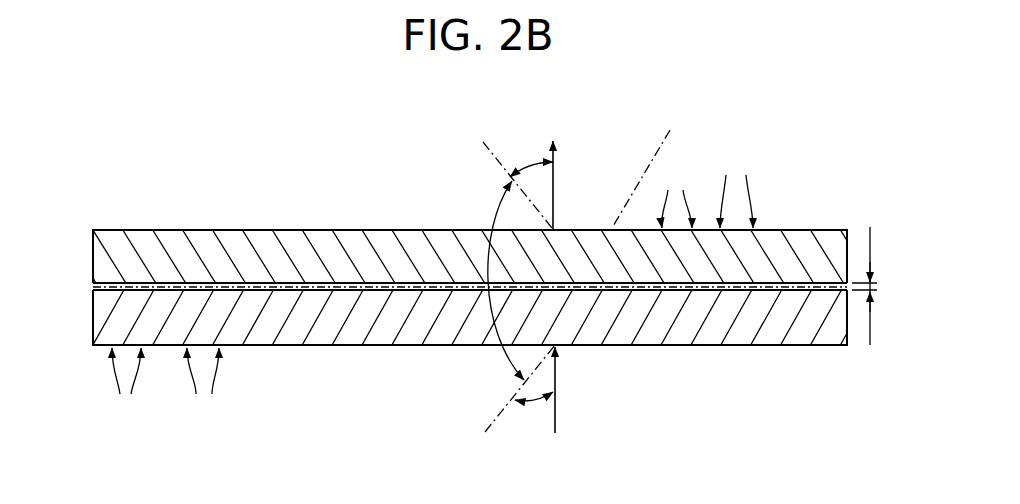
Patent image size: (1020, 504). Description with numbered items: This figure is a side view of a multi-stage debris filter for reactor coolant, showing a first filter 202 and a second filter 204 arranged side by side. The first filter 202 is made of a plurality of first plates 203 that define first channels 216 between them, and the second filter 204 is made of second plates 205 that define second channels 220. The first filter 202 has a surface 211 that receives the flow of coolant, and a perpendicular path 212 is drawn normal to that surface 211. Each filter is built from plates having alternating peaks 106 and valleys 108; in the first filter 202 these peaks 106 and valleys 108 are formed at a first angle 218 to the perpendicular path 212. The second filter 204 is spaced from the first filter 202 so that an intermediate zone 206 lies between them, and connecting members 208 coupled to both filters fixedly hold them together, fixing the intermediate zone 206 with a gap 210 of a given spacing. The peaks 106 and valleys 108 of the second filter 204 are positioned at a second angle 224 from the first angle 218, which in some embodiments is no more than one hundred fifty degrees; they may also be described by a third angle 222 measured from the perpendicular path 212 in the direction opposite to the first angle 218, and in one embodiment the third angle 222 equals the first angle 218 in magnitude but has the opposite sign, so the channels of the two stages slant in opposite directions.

The peaks 106 is at (400, 292).
The valleys 108 is at (469, 284).
The first filter 202 is at (92, 321).
The first plates 203 is at (785, 354).
The second filter 204 is at (93, 257).
The second plates 205 is at (823, 228).
The intermediate zone 206 is at (93, 287).
The connecting members 208 is at (265, 287).
The gap 210 is at (870, 242).
The surface 211 is at (660, 354).
The perpendicular path 212 is at (557, 410).
The first channels 216 is at (595, 334).
The first angle 218 is at (533, 403).
The second channels 220 is at (323, 230).
The third angle 222 is at (533, 164).
The second angle 224 is at (502, 356).